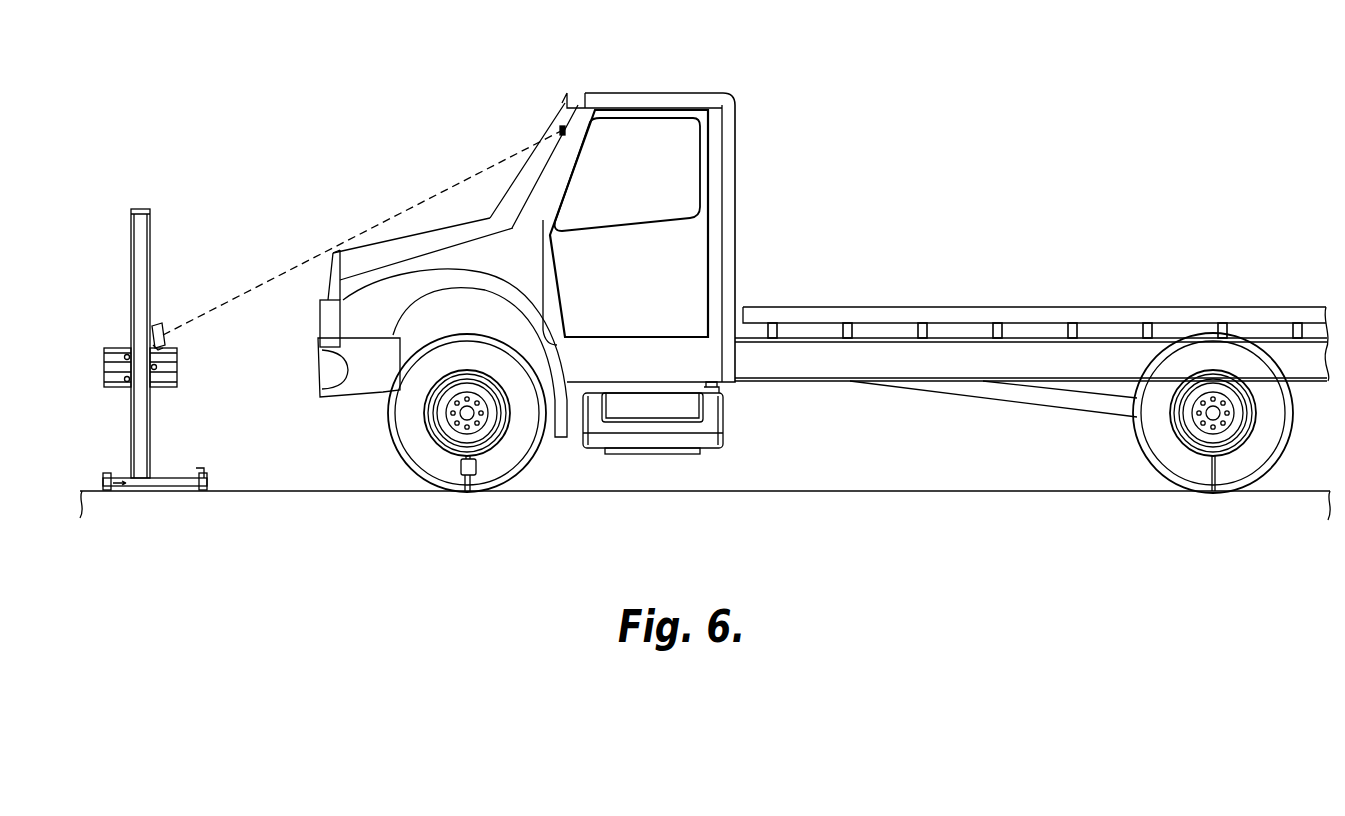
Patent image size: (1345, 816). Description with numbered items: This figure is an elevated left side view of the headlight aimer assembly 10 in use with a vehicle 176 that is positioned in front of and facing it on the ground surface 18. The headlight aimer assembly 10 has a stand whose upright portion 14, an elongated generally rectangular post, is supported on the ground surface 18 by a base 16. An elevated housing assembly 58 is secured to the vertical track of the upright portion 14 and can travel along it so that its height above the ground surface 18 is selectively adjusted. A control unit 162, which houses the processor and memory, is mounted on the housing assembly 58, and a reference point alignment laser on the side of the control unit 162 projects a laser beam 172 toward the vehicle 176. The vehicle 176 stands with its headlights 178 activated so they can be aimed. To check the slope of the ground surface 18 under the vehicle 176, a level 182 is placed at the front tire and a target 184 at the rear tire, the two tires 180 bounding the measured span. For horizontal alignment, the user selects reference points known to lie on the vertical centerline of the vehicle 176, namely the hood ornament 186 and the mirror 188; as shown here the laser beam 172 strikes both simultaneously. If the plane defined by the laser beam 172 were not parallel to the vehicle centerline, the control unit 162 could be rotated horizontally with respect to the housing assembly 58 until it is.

The headlight aimer assembly 10 is at (116, 216).
The upright portion 14 is at (140, 433).
The base 16 is at (158, 485).
The ground surface 18 is at (265, 491).
The housing assembly 58 is at (176, 380).
The control unit 162 is at (158, 322).
The laser beam 172 is at (300, 263).
The vehicle 176 is at (698, 96).
The headlights 178 is at (319, 313).
The tires 180 is at (518, 451).
The level 182 is at (469, 471).
The target 184 is at (1216, 487).
The hood ornament 186 is at (350, 240).
The mirror 188 is at (560, 126).